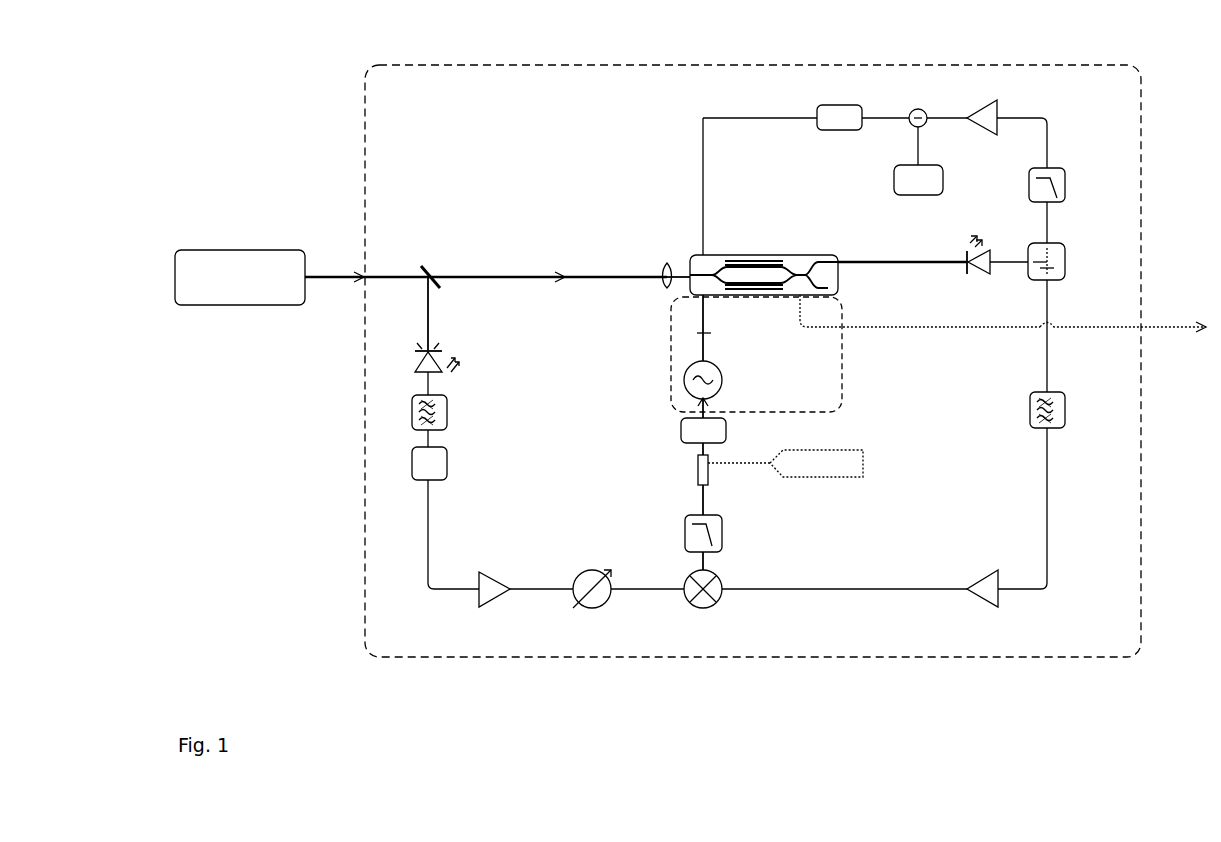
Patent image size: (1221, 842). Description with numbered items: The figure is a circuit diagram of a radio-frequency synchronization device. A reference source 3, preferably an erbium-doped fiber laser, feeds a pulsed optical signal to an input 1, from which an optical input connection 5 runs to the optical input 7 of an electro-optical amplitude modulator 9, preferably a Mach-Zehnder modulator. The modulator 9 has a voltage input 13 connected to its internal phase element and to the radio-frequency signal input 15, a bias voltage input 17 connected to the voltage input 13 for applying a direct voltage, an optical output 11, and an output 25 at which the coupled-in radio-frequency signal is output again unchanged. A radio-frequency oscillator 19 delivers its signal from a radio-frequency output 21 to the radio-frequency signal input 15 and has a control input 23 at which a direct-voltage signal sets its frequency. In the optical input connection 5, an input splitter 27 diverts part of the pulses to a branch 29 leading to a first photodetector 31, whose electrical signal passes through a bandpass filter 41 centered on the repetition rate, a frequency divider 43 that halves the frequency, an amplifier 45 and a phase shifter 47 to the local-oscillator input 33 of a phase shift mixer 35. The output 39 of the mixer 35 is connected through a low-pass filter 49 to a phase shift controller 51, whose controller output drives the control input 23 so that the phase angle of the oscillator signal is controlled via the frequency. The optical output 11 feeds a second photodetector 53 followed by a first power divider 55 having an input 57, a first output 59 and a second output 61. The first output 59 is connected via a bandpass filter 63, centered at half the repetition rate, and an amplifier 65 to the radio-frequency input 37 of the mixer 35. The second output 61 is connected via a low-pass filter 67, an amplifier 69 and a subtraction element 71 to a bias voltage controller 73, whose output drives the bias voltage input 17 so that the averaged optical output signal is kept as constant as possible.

The input 1 is at (360, 268).
The reference source 3 is at (247, 289).
The optical input connection 5 is at (601, 264).
The optical input 7 is at (689, 266).
The electro-optical amplitude modulator 9 is at (786, 252).
The optical output 11 is at (836, 262).
The voltage input 13 is at (698, 306).
The radio-frequency signal input 15 is at (700, 338).
The bias voltage input 17 is at (706, 252).
The radio-frequency oscillator 19 is at (683, 388).
The radio-frequency output 21 is at (706, 362).
The control input 23 is at (712, 400).
The output 25 is at (802, 305).
The input splitter 27 is at (428, 248).
The branch 29 is at (441, 291).
The first photodetector 31 is at (410, 366).
The local-oscillator input 33 is at (690, 600).
The phase shift mixer 35 is at (716, 602).
The radio-frequency input 37 is at (720, 582).
The output 39 is at (696, 582).
The bandpass filter 41 is at (410, 418).
The frequency divider 43 is at (410, 468).
The amplifier 45 is at (484, 598).
The phase shifter 47 is at (592, 566).
The low-pass filter 49 is at (724, 520).
The phase shift controller 51 is at (727, 431).
The second photodetector 53 is at (972, 280).
The first power divider 55 is at (1050, 255).
The input 57 is at (1028, 272).
The first output 59 is at (1058, 280).
The second output 61 is at (1047, 240).
The bandpass filter 63 is at (1067, 430).
The amplifier 65 is at (977, 569).
The low-pass filter 67 is at (1064, 172).
The amplifier 69 is at (988, 110).
The subtraction element 71 is at (927, 126).
The bias voltage controller 73 is at (838, 104).